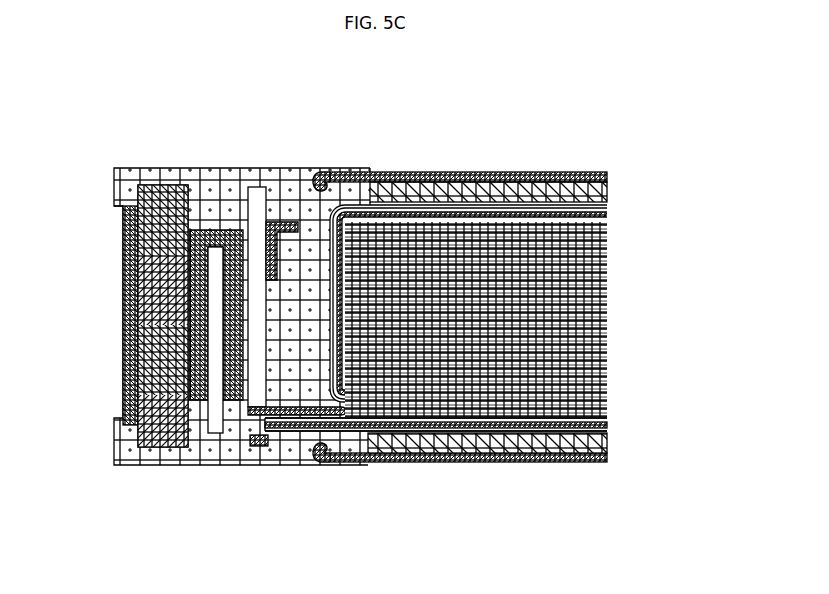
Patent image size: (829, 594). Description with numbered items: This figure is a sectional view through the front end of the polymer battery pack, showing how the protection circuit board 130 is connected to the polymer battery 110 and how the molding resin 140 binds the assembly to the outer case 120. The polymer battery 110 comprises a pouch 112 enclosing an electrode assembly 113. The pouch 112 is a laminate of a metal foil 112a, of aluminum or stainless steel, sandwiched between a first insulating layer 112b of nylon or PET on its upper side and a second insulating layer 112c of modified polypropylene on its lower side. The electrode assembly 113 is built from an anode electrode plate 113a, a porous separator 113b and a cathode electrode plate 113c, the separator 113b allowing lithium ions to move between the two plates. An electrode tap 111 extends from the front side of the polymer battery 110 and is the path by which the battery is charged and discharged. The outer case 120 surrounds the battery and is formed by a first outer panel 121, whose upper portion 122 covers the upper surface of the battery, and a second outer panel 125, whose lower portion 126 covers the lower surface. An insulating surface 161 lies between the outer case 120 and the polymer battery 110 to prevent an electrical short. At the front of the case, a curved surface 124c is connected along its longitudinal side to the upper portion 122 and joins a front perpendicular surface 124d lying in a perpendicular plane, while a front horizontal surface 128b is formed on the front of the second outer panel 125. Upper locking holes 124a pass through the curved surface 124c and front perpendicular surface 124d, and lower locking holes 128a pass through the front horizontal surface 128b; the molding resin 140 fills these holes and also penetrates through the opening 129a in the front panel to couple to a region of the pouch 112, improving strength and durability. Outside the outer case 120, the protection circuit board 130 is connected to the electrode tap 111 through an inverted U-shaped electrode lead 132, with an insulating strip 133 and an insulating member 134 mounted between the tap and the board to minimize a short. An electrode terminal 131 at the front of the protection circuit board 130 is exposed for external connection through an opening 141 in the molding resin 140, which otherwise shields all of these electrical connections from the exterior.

The polymer battery 110 is at (612, 313).
The electrode tap 111 is at (246, 410).
The pouch 112 is at (468, 248).
The metal foil 112a is at (525, 209).
The first insulating layer 112b is at (478, 205).
The second insulating layer 112c is at (478, 125).
The electrode assembly 113 is at (436, 475).
The anode electrode plate 113a is at (477, 510).
The separator 113b is at (527, 412).
The cathode electrode plate 113c is at (477, 408).
The outer case 120 is at (533, 312).
The first outer panel 121 is at (502, 242).
The upper portion 122 is at (390, 172).
The upper locking holes 124a is at (314, 187).
The curved surface 124c is at (320, 172).
The front perpendicular surface 124d is at (282, 220).
The second outer panel 125 is at (503, 470).
The lower portion 126 is at (405, 463).
The lower locking holes 128a is at (316, 449).
The front horizontal surface 128b is at (258, 448).
The opening 129a is at (246, 230).
The protection circuit board 130 is at (146, 380).
The electrode terminal 131 is at (127, 322).
The electrode lead 132 is at (203, 228).
The insulating strip 133 is at (242, 398).
The insulating member 134 is at (216, 247).
The molding resin 140 is at (147, 167).
The openings 141 is at (113, 212).
The insulating surface 161 is at (425, 190).